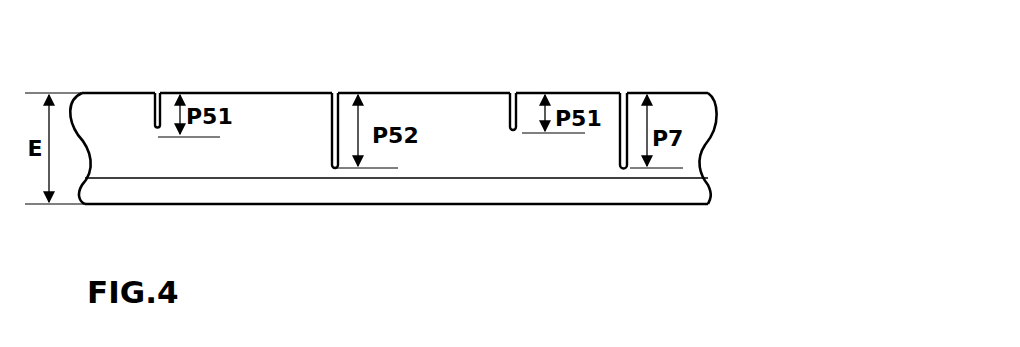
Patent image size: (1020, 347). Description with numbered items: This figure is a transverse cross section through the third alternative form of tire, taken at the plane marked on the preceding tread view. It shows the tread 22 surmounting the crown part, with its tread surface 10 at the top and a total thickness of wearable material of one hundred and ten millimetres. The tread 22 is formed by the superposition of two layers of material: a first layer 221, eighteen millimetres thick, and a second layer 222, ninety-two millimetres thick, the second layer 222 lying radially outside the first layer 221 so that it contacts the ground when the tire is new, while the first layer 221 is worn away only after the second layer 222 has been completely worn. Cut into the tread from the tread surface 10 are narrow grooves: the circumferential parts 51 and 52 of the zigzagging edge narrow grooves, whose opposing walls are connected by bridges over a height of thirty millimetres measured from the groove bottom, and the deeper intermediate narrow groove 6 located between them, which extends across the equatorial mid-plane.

The tread surface 10 is at (448, 93).
The circumferential part of the zigzagging narrow groove 51 is at (156, 106).
The second groove 52 is at (327, 110).
The intermediate narrow groove 6 is at (622, 105).
The tread 22 is at (690, 155).
The second layer 222 is at (690, 120).
The first layer 221 is at (687, 192).